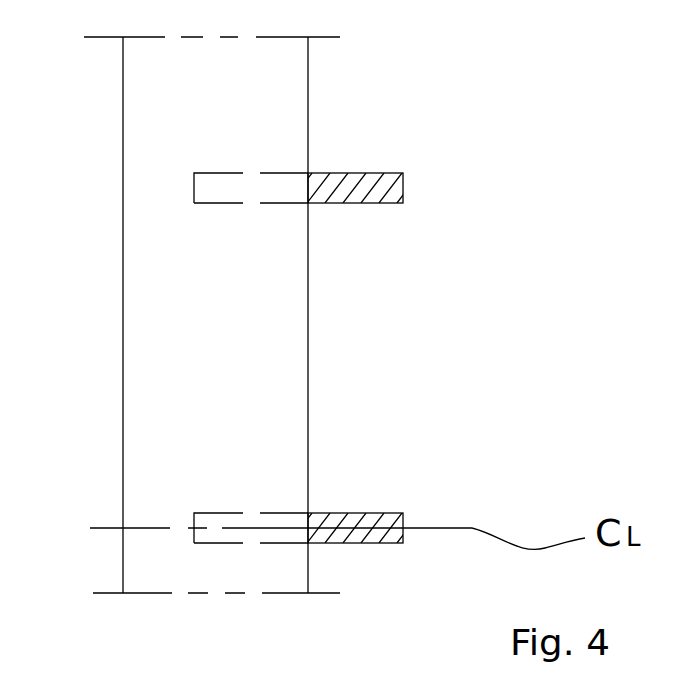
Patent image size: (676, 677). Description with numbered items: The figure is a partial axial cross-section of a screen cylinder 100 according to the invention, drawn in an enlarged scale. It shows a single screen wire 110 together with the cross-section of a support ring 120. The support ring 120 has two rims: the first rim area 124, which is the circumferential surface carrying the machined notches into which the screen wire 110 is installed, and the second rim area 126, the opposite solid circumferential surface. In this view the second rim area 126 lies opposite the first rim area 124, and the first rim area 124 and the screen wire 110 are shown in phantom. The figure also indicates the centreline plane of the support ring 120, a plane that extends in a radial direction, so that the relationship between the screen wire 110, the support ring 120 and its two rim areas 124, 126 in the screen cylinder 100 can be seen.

The screen cylinder 100 is at (366, 105).
The screen wire 110 is at (282, 355).
The support ring 120 is at (346, 488).
The first rim area 124 is at (195, 527).
The second rim area 126 is at (405, 512).